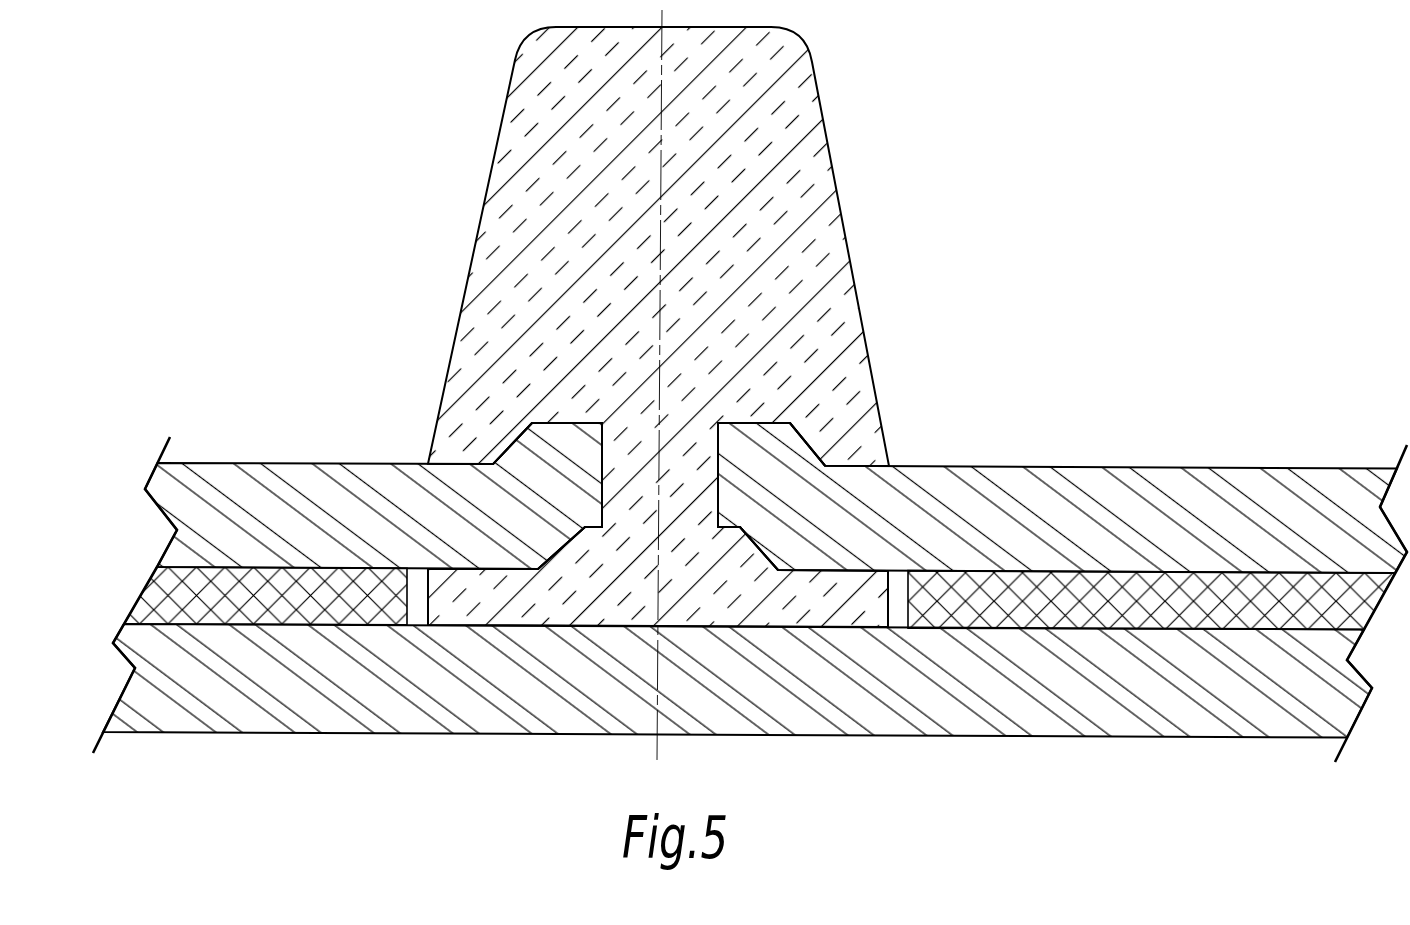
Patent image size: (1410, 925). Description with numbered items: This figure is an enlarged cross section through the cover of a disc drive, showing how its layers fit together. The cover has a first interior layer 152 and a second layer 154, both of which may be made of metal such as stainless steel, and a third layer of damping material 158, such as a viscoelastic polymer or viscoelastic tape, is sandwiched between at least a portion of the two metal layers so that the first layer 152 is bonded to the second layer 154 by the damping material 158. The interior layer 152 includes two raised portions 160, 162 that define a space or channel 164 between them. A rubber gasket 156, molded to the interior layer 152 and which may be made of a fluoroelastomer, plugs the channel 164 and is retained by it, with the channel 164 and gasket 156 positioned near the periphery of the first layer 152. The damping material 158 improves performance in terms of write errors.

The first interior layer 152 is at (226, 463).
The second layer 154 is at (183, 734).
The rubber gasket 156 is at (513, 62).
The damping material 158 is at (277, 615).
The raised portion 160 is at (520, 460).
The raised portion 162 is at (762, 462).
The channel 164 is at (722, 401).